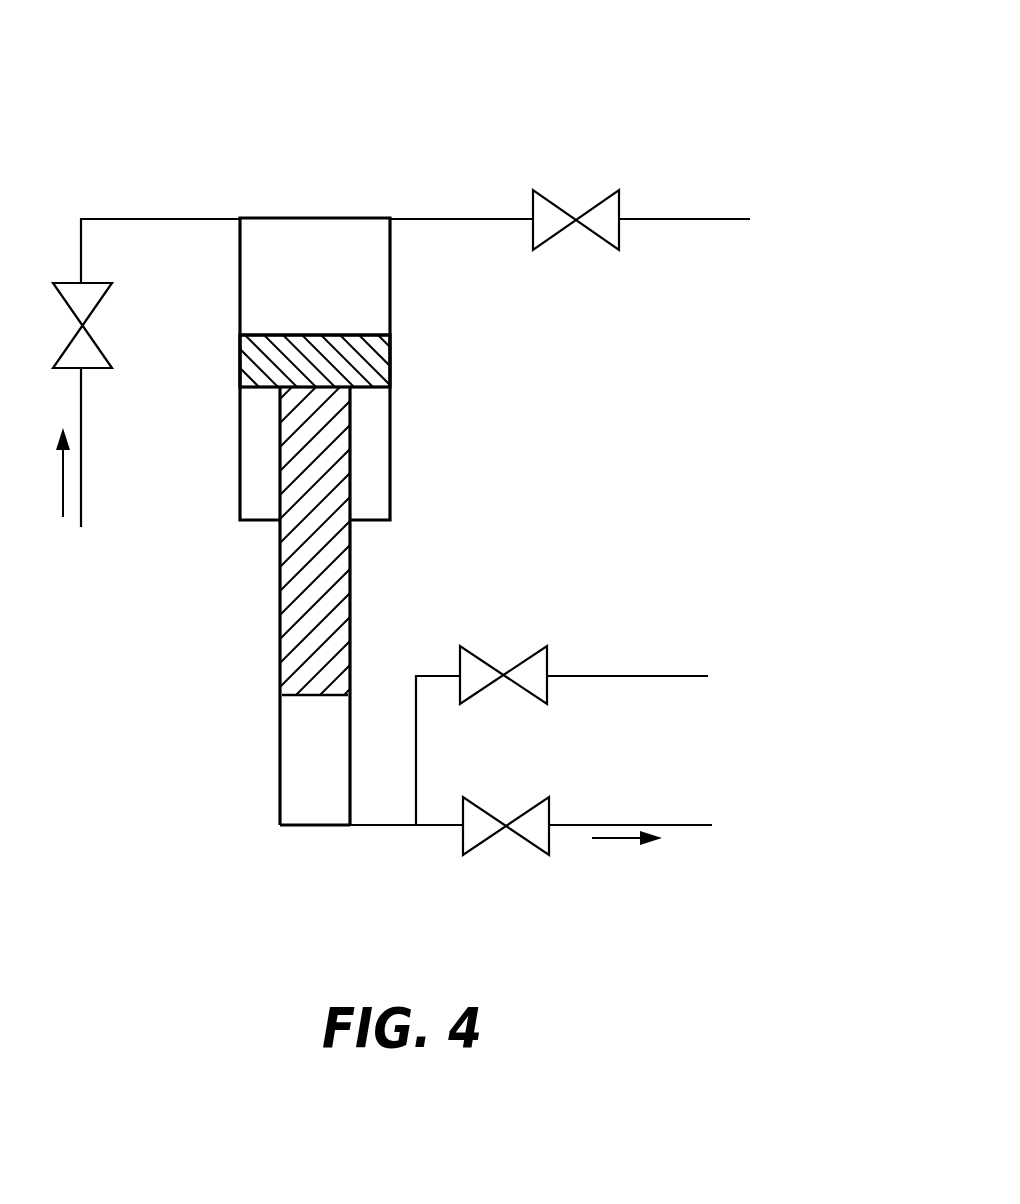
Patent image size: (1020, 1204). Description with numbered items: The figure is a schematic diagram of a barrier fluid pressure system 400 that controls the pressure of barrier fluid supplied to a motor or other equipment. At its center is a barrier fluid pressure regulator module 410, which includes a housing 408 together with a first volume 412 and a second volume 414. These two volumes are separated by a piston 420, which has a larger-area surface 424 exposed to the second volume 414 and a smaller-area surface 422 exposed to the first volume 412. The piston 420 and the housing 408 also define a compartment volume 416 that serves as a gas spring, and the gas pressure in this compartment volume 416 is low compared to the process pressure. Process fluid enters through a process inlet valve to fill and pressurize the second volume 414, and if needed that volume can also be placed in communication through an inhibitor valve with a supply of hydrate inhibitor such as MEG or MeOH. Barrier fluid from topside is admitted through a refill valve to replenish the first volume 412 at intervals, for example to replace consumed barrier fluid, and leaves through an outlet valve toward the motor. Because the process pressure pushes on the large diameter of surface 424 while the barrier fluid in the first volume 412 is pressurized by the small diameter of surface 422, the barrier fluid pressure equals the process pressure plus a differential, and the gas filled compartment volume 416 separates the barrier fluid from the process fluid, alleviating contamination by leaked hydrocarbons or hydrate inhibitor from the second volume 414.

The barrier fluid pressure system 400 is at (548, 50).
The housing 408 is at (392, 258).
The barrier fluid pressure regulator module 410 is at (418, 540).
The first volume 412 is at (343, 771).
The second volume 414 is at (343, 289).
The compartment volume 416 is at (372, 447).
The piston 420 is at (375, 357).
The surface 422 is at (318, 705).
The surface 424 is at (282, 328).